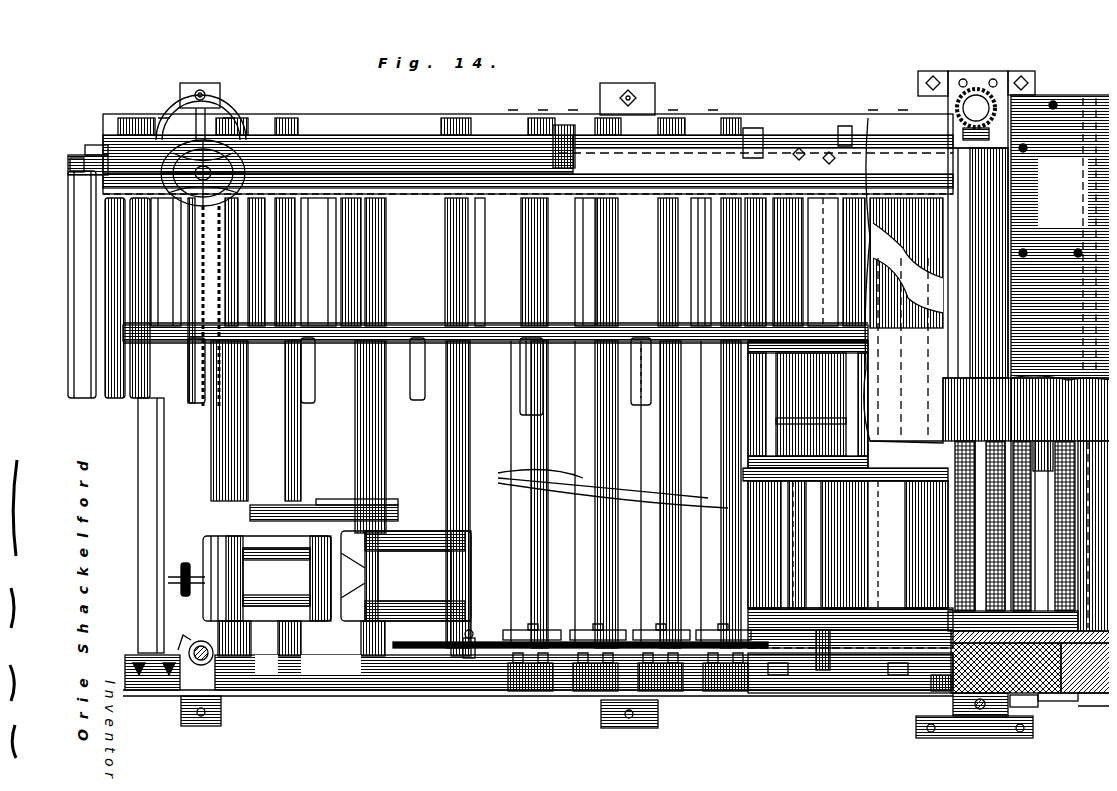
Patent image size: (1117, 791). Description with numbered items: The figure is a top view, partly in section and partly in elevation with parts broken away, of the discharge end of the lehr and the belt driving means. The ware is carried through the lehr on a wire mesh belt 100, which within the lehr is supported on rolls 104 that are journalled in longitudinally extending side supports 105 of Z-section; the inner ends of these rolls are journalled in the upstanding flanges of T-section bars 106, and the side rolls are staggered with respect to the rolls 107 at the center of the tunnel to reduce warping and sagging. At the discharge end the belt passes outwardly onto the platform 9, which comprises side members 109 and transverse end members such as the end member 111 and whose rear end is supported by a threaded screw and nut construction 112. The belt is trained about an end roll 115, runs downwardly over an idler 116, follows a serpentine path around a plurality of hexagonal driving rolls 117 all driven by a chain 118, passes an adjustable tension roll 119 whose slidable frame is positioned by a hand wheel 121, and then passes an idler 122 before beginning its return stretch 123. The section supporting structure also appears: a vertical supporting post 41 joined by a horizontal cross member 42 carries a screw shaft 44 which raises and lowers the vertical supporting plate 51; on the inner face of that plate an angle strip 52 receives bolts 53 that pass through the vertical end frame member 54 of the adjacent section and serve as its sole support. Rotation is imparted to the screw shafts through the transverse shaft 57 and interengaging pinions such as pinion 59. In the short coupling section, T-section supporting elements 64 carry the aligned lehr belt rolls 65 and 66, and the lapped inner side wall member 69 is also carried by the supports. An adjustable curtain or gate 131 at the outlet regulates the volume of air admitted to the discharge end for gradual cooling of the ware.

The platform 9 is at (778, 103).
The vertical supporting post 41 is at (960, 700).
The horizontal cross member 42 is at (985, 323).
The screw shaft 44 is at (973, 708).
The vertical supporting plate 51 is at (950, 690).
The angle strip 52 is at (992, 688).
The bolt 53 is at (1022, 700).
The vertical end frame member 54 is at (1017, 700).
The transverse shaft 57 is at (968, 222).
The pinion 59 is at (988, 95).
The supporting element 64 is at (968, 487).
The lehr belt roll 65 is at (990, 438).
The lehr belt roll 66 is at (977, 409).
The inner side wall member 69 is at (1050, 655).
The wire mesh belt 100 is at (1062, 420).
The roll 104 is at (465, 262).
The side support 105 is at (641, 180).
The T-section bar 106 is at (916, 406).
The roll 107 is at (412, 380).
The side member 109 is at (556, 160).
The transverse end member 111 is at (96, 392).
The threaded screw and nut construction 112 is at (188, 658).
The end roll 115 is at (70, 240).
The idler 116 is at (142, 430).
The hexagonal driving roll 117 is at (600, 486).
The chain 118 is at (500, 641).
The adjustable tension roll 119 is at (880, 548).
The hand wheel 121 is at (1095, 703).
The idler 122 is at (811, 427).
The return stretch 123 is at (850, 578).
The adjustable curtain or gate 131 is at (936, 378).